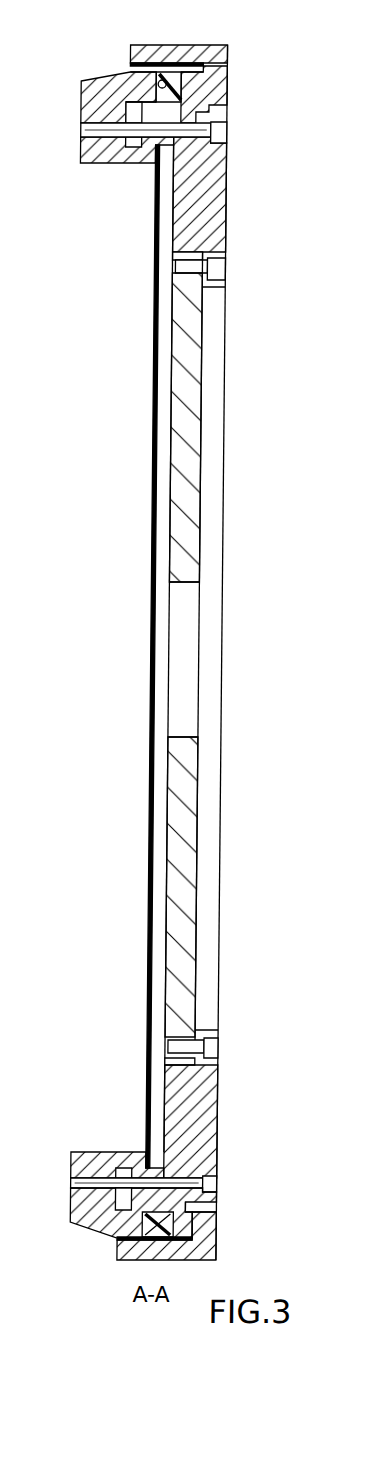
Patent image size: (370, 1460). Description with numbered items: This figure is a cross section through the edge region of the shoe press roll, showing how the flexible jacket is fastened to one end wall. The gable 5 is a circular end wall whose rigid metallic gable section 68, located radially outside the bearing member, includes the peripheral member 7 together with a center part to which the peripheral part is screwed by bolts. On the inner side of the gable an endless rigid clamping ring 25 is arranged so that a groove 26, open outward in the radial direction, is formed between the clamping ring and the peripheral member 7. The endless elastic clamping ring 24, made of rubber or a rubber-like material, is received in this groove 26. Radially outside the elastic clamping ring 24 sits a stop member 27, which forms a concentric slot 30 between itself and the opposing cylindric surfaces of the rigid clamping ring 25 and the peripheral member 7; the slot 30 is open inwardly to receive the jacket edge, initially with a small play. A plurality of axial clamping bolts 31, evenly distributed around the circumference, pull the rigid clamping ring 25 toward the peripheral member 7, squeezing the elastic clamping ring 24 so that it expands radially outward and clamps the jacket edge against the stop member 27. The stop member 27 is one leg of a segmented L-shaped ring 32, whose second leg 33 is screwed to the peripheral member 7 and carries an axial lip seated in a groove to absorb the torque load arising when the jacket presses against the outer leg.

The rigid clamping ring 25 is at (82, 103).
The groove 26 is at (154, 83).
The stop member 27 is at (146, 48).
The concentric slot 30 is at (178, 62).
The elastic clamping ring 24 is at (183, 80).
The axial clamping bolt 31 is at (198, 148).
The peripheral member 7 is at (227, 236).
The gable 5 is at (227, 404).
The gable section 68 is at (200, 828).
The segmented L-shaped ring 32 is at (229, 1208).
The second leg 33 is at (218, 1245).